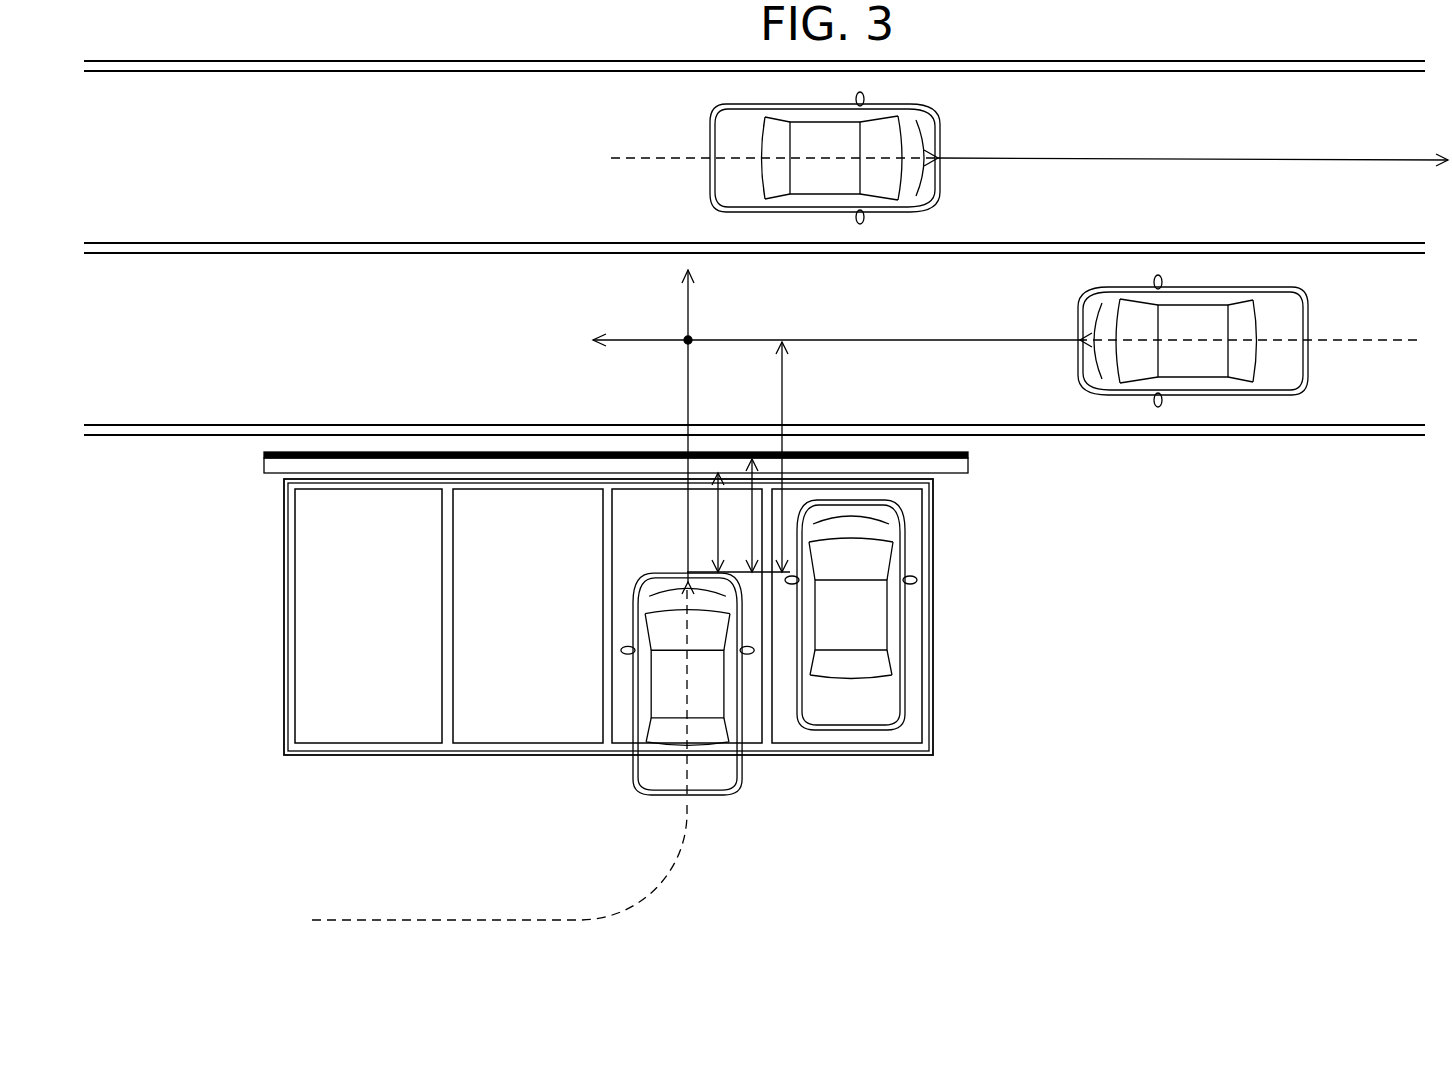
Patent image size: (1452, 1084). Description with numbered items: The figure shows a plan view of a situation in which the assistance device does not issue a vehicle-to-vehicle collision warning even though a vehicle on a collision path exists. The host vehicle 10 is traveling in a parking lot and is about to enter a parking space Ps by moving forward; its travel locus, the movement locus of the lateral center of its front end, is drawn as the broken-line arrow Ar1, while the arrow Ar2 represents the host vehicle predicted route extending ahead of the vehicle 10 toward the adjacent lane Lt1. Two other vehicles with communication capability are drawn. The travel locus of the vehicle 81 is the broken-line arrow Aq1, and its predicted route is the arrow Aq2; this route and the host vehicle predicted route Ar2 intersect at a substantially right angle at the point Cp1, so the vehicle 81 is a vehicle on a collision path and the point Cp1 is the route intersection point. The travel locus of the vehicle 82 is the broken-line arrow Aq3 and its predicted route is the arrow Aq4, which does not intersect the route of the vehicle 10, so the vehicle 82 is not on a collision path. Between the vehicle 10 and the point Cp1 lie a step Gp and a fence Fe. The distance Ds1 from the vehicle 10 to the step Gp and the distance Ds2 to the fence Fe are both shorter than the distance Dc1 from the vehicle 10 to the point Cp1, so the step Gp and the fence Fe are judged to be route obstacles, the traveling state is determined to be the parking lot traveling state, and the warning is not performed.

The vehicle 10 is at (652, 797).
The vehicle 81 is at (1086, 390).
The vehicle 82 is at (940, 186).
The first lane Lt1 is at (1418, 368).
The broken-line arrow Aq1 is at (1376, 340).
The arrow Aq2 is at (860, 340).
The broken-line arrow Aq3 is at (622, 160).
The arrow Aq4 is at (1120, 158).
The broken-line arrow Ar1 is at (392, 920).
The arrow Ar2 is at (686, 395).
The point Cp1 is at (688, 340).
The distance Dc1 is at (763, 457).
The distance Ds1 is at (707, 522).
The distance Ds2 is at (741, 515).
The fence Fe is at (968, 456).
The step Gp is at (947, 476).
The parking space Ps is at (764, 760).